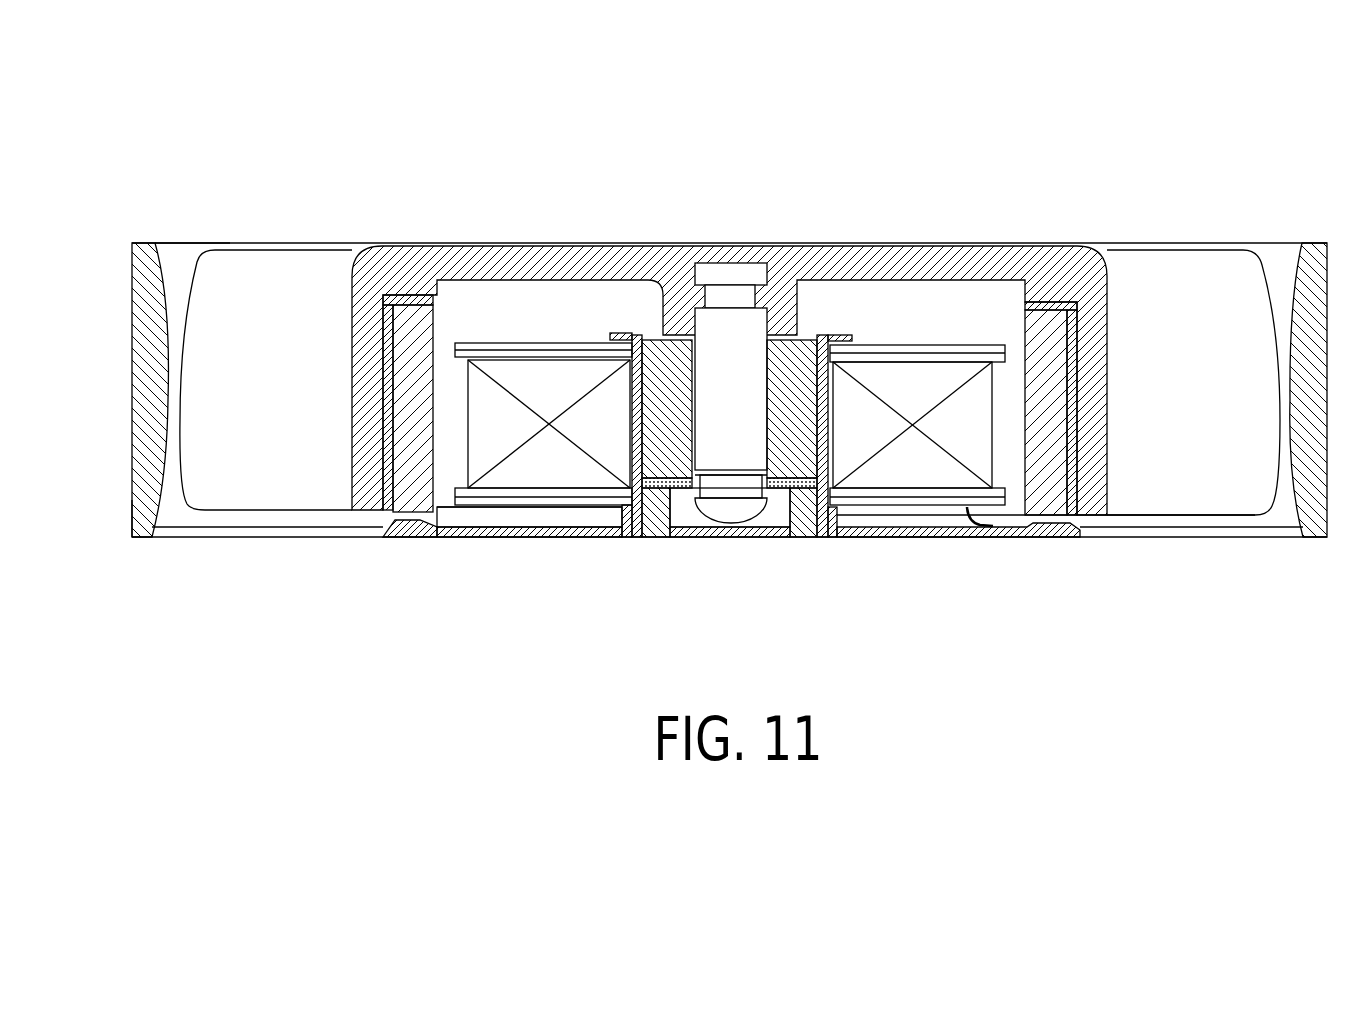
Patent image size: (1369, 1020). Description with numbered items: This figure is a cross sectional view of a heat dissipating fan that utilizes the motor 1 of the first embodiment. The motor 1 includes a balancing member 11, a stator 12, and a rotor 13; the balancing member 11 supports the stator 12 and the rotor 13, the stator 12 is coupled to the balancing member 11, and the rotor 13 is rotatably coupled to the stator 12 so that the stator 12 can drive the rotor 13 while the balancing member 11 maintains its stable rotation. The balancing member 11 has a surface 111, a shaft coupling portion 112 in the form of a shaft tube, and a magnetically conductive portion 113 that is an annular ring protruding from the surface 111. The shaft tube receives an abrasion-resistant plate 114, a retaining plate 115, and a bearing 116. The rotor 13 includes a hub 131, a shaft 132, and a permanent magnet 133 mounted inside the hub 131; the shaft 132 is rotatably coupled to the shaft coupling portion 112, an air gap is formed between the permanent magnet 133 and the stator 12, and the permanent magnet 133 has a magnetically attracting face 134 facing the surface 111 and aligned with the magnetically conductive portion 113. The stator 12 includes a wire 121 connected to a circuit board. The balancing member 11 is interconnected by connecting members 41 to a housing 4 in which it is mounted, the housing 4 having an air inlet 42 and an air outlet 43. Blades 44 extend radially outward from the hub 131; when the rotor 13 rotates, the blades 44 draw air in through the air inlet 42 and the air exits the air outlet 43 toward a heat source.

The motor 1 is at (368, 220).
The housing 4 is at (140, 243).
The connecting member 41 is at (150, 523).
The air inlet 42 is at (188, 243).
The air outlet 43 is at (226, 535).
The blade 44 is at (200, 286).
The balancing member 11 is at (777, 413).
The surface 111 is at (513, 527).
The shaft coupling portion 112 is at (620, 340).
The magnetically conductive portion 113 is at (415, 517).
The abrasion-resistant plate 114 is at (800, 528).
The retaining plate 115 is at (680, 490).
The bearing 116 is at (652, 343).
The stator 12 is at (737, 392).
The wire 121 is at (974, 524).
The rotor 13 is at (767, 323).
The hub 131 is at (1108, 353).
The shaft 132 is at (732, 337).
The permanent magnet 133 is at (413, 320).
The magnetically attracting face 134 is at (420, 517).